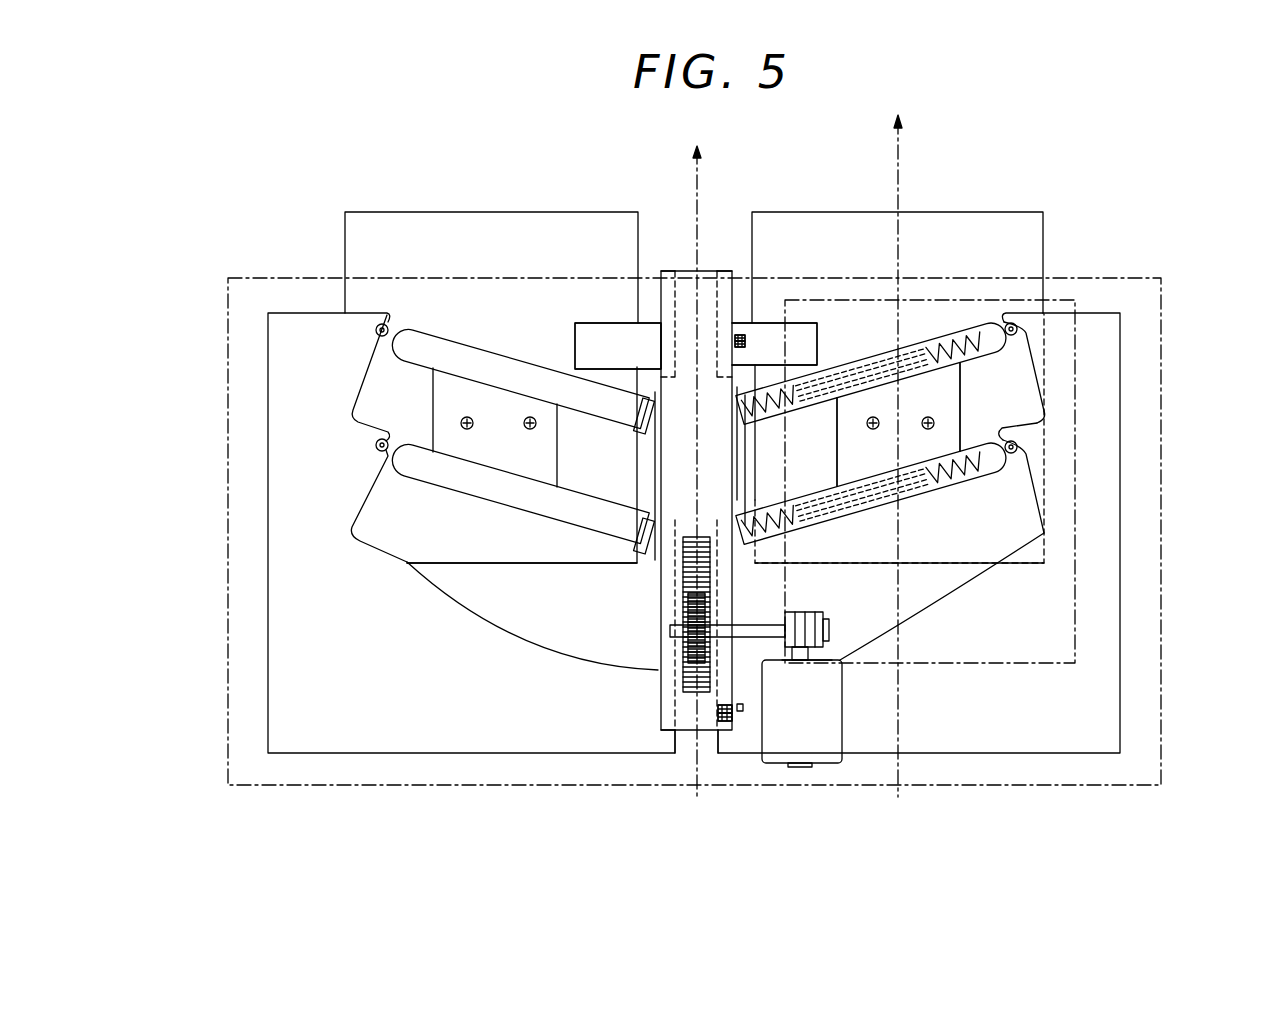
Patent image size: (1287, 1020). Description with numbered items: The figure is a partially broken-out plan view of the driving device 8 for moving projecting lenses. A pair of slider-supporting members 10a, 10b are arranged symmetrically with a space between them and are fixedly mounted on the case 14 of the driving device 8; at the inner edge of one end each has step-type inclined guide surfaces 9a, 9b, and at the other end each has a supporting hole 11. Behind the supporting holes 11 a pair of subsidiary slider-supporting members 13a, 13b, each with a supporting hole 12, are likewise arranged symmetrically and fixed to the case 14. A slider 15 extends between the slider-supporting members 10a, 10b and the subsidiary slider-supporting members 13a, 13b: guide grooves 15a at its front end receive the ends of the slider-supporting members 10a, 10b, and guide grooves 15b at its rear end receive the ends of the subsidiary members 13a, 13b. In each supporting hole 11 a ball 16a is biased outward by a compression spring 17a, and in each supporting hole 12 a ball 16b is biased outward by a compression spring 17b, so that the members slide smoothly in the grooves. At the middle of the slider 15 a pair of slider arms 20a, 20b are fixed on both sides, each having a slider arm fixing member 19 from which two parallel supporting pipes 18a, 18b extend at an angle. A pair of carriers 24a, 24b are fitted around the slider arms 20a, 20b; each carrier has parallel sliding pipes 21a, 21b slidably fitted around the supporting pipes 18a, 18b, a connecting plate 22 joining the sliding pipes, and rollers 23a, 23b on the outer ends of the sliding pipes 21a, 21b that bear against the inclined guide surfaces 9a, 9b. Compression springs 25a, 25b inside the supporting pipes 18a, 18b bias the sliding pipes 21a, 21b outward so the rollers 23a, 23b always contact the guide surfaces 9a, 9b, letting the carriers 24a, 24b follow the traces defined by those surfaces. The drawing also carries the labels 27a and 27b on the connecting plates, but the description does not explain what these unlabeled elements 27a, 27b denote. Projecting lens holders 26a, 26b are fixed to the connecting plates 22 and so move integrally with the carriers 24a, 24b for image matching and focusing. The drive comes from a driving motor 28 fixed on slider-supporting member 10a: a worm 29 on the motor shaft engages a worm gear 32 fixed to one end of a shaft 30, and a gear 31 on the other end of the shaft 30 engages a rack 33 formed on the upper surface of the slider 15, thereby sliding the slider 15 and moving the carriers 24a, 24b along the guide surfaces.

The driving device 8 is at (293, 236).
The inclined guide surface 9a is at (1029, 372).
The inclined guide surface 9b is at (364, 372).
The slider-supporting member 10a is at (972, 753).
The slider-supporting member 10b is at (395, 753).
The supporting hole 11 is at (743, 712).
The supporting hole 12 is at (760, 330).
The subsidiary slider-supporting member 13a is at (790, 340).
The subsidiary slider-supporting member 13b is at (587, 343).
The case 14 is at (1085, 278).
The slider 15 is at (688, 268).
The guide groove 15a is at (681, 260).
The guide groove 15b is at (721, 300).
The ball 16a is at (706, 735).
The ball 16b is at (742, 336).
The compression spring 17a is at (737, 722).
The compression spring 17b is at (745, 352).
The supporting pipe 18a is at (1012, 318).
The supporting pipe 18b is at (1001, 452).
The slider arm fixing member 19 is at (648, 397).
The slider arm 20a is at (742, 457).
The slider arm 20b is at (653, 470).
The sliding pipe 21a is at (985, 322).
The sliding pipe 21b is at (969, 478).
The connecting plate 22 is at (958, 412).
The roller 23a is at (1027, 343).
The roller 23b is at (1022, 463).
The carrier 24a is at (970, 383).
The carrier 24b is at (428, 384).
The compression spring 25a is at (998, 325).
The compression spring 25b is at (992, 462).
The projecting lens holder 26a is at (918, 212).
The projecting lens holder 26b is at (421, 212).
The right screws 27a is at (870, 428).
The left pivot pins 27b is at (464, 422).
The driving motor 28 is at (828, 767).
The worm 29 is at (808, 614).
The shaft 30 is at (750, 625).
The gear 31 is at (688, 612).
The worm gear 32 is at (829, 622).
The rack 33 is at (683, 578).